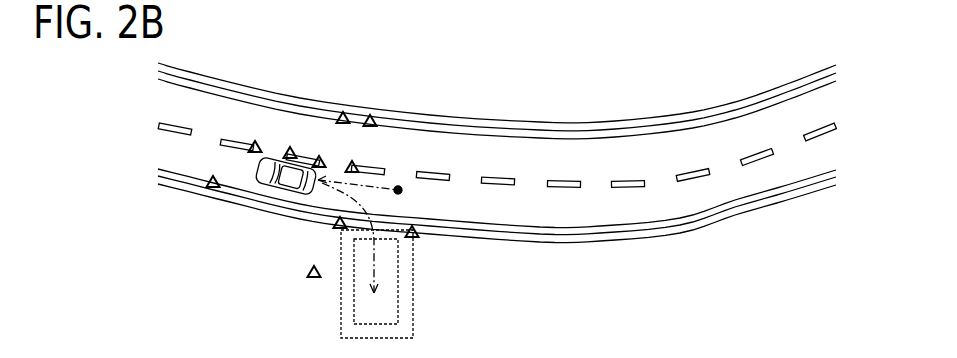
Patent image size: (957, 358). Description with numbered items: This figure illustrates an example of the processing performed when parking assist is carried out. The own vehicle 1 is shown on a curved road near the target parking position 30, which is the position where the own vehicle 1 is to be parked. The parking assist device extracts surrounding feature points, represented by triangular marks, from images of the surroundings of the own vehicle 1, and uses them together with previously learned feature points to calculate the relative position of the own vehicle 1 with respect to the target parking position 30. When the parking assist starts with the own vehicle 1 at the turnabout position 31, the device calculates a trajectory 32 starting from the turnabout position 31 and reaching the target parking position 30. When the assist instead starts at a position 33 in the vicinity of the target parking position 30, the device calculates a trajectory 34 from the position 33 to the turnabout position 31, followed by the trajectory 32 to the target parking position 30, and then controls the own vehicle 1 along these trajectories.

The own vehicle 1 is at (261, 227).
The turnabout position 31 is at (267, 183).
The target parking position 30 is at (413, 304).
The trajectory 32 is at (398, 270).
The position 33 is at (398, 186).
The trajectory 34 is at (368, 187).